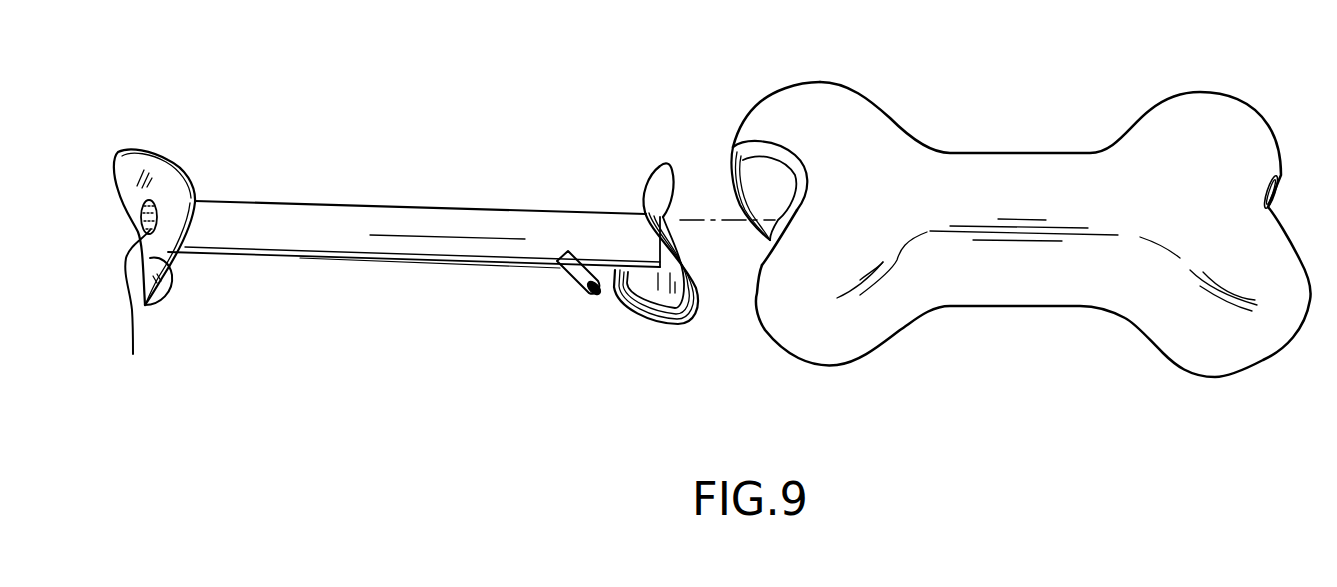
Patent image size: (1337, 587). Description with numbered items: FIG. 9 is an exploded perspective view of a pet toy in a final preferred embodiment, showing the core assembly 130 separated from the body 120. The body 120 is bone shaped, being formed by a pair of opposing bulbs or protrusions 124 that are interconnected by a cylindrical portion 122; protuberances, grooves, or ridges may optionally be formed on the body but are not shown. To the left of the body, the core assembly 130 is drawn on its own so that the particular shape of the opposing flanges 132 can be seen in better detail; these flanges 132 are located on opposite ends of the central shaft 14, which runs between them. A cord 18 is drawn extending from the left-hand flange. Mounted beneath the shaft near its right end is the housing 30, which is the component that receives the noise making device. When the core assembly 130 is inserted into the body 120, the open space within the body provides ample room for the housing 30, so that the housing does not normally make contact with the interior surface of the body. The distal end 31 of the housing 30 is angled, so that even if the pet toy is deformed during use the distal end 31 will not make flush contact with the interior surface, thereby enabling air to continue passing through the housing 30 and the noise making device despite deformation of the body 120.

The central shaft 14 is at (380, 208).
The cord 18 is at (136, 307).
The housing 30 is at (568, 279).
The distal end 31 is at (594, 297).
The body 120 is at (1004, 104).
The cylindrical portion 122 is at (1033, 152).
The bulbs or protrusions 124 is at (843, 100).
The core assembly 130 is at (463, 194).
The opposing flanges 132 is at (182, 164).